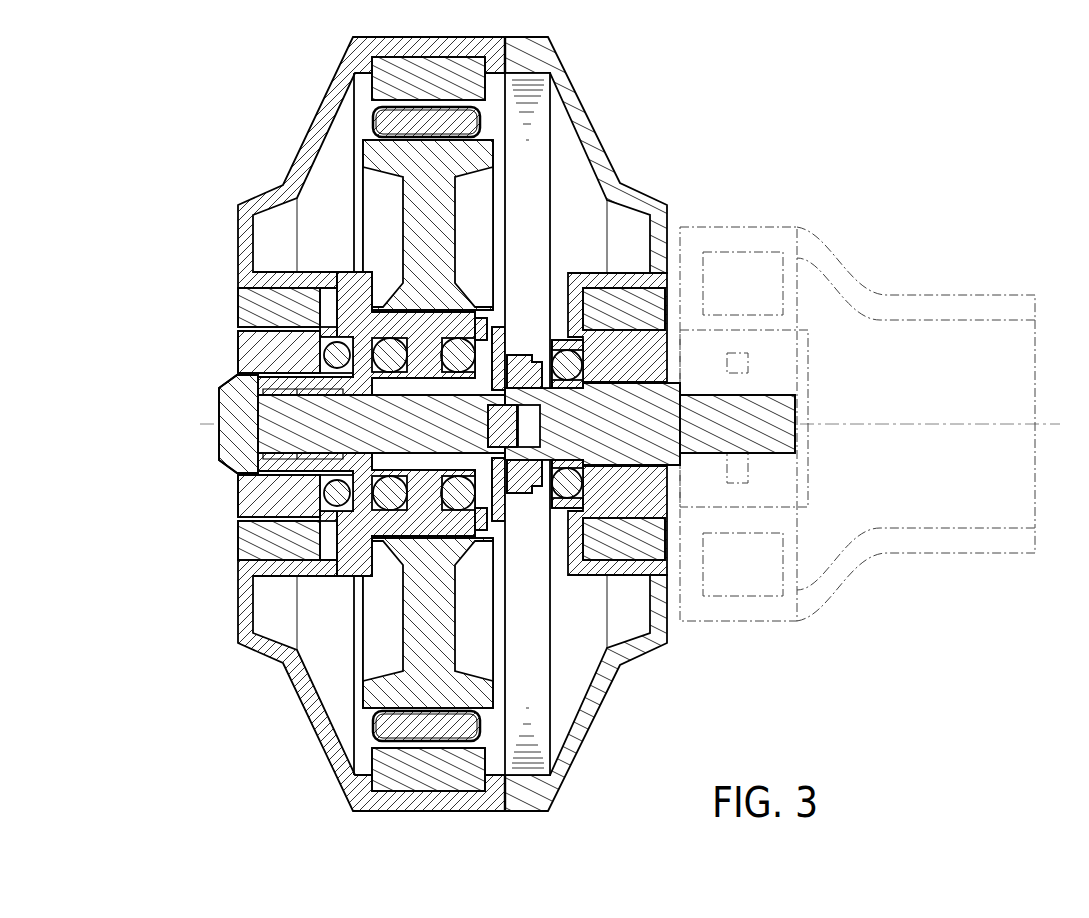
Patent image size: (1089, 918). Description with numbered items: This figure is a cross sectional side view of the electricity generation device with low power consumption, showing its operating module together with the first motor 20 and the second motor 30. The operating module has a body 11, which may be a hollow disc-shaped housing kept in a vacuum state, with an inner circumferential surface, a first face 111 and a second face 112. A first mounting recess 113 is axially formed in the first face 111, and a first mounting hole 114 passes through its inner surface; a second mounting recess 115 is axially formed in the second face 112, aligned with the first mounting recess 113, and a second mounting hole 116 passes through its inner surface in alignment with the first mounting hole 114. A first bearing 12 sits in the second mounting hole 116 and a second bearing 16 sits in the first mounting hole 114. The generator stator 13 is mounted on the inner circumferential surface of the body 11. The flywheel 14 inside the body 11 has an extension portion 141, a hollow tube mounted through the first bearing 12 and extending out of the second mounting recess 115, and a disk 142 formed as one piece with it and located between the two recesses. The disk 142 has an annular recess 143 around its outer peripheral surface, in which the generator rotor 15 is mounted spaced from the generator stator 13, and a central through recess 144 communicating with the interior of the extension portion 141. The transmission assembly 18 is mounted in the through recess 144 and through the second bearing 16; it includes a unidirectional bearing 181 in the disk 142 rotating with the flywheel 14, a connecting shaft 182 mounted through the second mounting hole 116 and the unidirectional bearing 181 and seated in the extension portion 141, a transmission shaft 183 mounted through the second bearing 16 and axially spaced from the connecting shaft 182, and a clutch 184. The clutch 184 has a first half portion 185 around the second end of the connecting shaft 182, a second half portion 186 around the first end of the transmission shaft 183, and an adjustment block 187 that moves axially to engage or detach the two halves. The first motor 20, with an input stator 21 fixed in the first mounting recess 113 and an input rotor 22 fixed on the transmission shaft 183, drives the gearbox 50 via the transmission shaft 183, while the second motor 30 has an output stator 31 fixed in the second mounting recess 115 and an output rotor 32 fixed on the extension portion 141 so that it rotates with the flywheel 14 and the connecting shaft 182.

The body 11 is at (447, 424).
The first face 111 is at (668, 627).
The second face 112 is at (243, 622).
The first mounting recess 113 is at (668, 293).
The first mounting hole 114 is at (592, 352).
The second mounting recess 115 is at (240, 543).
The second mounting hole 116 is at (318, 343).
The first bearing 12 is at (340, 490).
The generator stator 13 is at (390, 765).
The flywheel 14 is at (358, 424).
The extension portion 141 is at (236, 410).
The disk 142 is at (374, 152).
The annular recess 143 is at (417, 135).
The through recess 144 is at (347, 330).
The generator rotor 15 is at (380, 728).
The second bearing 16 is at (570, 366).
The transmission assembly 18 is at (535, 424).
The unidirectional bearing 181 is at (412, 508).
The connecting shaft 182 is at (270, 443).
The transmission shaft 183 is at (798, 437).
The clutch 184 is at (518, 507).
The first half portion 185 is at (486, 318).
The second half portion 186 is at (526, 352).
The adjustment block 187 is at (490, 432).
The first motor 20 is at (673, 538).
The input stator 21 is at (640, 552).
The input rotor 22 is at (660, 478).
The second motor 30 is at (239, 409).
The output stator 31 is at (250, 304).
The output rotor 32 is at (250, 356).
The gearbox 50 is at (957, 268).